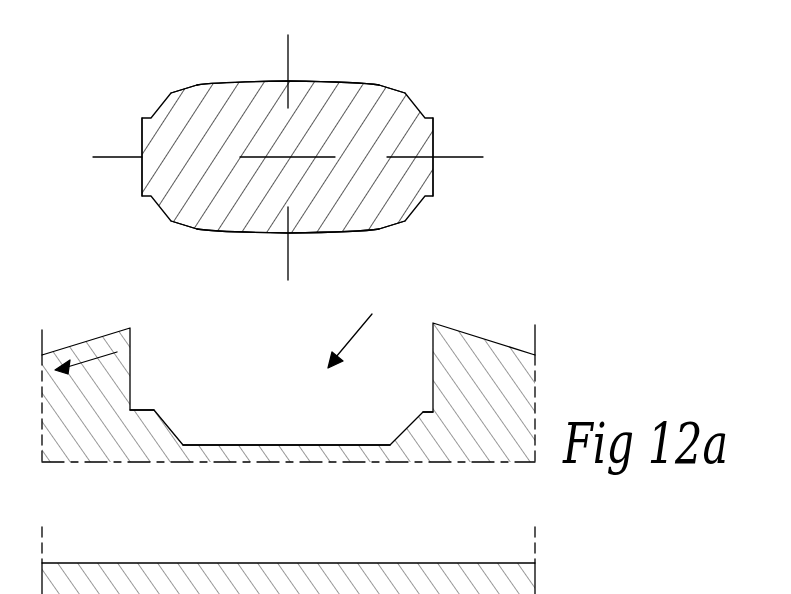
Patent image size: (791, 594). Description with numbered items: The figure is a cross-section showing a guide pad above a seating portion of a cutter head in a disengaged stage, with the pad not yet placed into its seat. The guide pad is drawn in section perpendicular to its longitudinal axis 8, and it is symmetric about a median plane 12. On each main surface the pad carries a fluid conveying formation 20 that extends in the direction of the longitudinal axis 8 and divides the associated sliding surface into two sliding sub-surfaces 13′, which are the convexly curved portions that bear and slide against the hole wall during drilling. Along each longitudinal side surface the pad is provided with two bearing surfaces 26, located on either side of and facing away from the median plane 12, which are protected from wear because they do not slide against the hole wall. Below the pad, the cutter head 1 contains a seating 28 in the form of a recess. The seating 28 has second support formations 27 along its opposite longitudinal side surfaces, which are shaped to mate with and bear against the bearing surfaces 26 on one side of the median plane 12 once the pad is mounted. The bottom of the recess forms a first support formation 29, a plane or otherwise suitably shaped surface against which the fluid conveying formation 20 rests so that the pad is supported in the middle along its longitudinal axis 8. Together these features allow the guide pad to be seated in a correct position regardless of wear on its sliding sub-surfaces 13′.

The housing body 1 is at (520, 373).
The longitudinal axis 8 is at (290, 156).
The median plane 12 is at (478, 162).
The sliding sub-surface 13′ is at (205, 84).
The fluid conveying formation 20 is at (298, 82).
The bearing surface 26 is at (147, 117).
The second support formation 27 is at (143, 408).
The seating 28 is at (364, 330).
The first support formation 29 is at (290, 443).